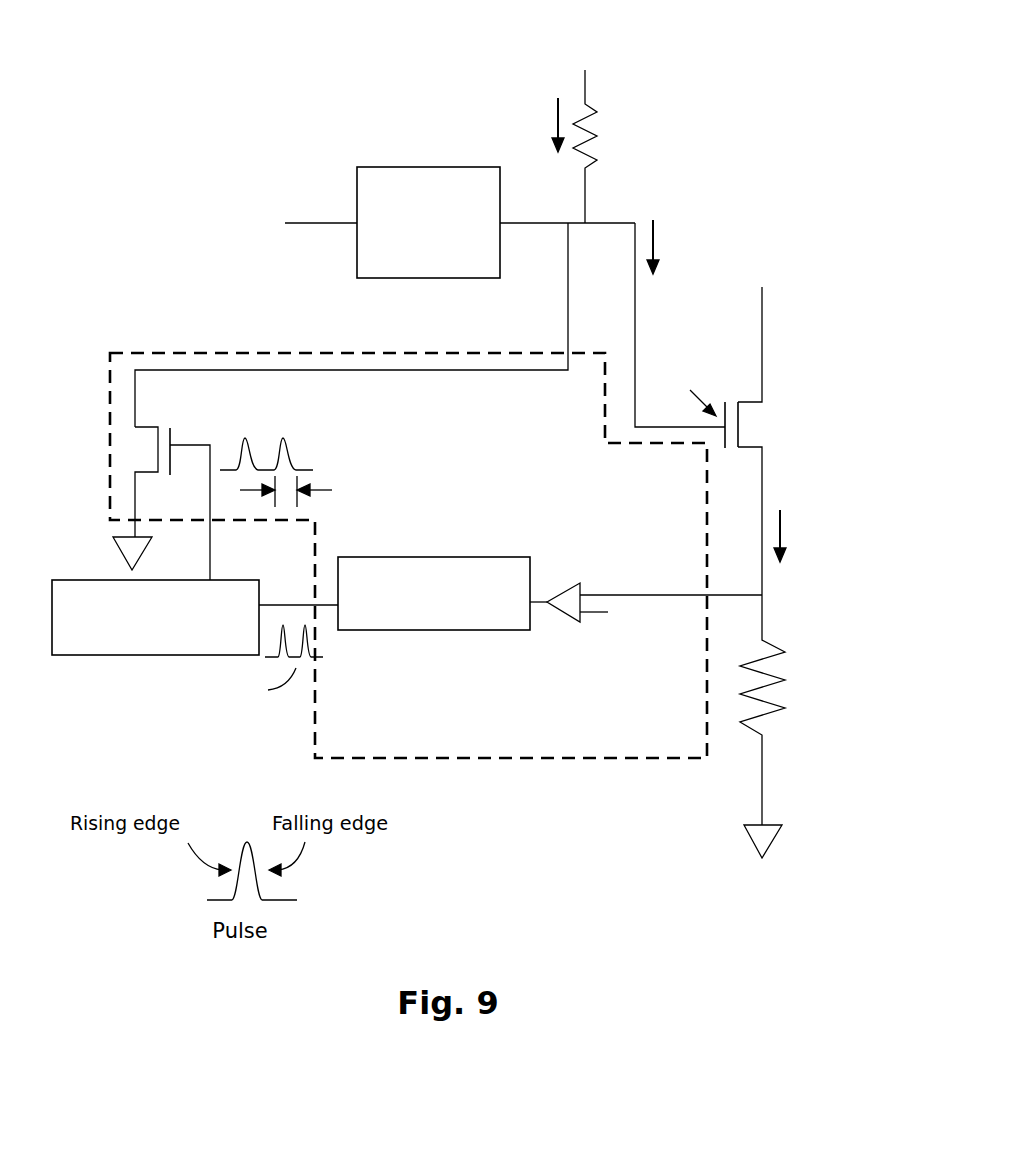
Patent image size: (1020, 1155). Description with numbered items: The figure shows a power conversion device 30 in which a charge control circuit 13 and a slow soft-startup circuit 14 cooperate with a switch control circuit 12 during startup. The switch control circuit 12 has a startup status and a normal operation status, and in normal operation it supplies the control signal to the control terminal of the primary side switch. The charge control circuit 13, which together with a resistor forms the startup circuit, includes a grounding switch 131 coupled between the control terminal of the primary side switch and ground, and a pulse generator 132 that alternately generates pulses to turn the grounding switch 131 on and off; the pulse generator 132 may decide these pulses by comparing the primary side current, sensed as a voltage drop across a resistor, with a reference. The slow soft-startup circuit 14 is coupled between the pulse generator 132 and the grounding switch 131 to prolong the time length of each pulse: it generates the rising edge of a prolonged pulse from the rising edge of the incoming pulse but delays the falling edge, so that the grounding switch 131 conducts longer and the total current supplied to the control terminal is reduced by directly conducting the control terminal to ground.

The power conversion device 30 is at (153, 226).
The switch control circuit 12 is at (482, 267).
The charge control circuit 13 is at (658, 752).
The grounding switch 131 is at (128, 447).
The pulse generator 132 is at (414, 620).
The slow soft-startup circuit 14 is at (206, 646).